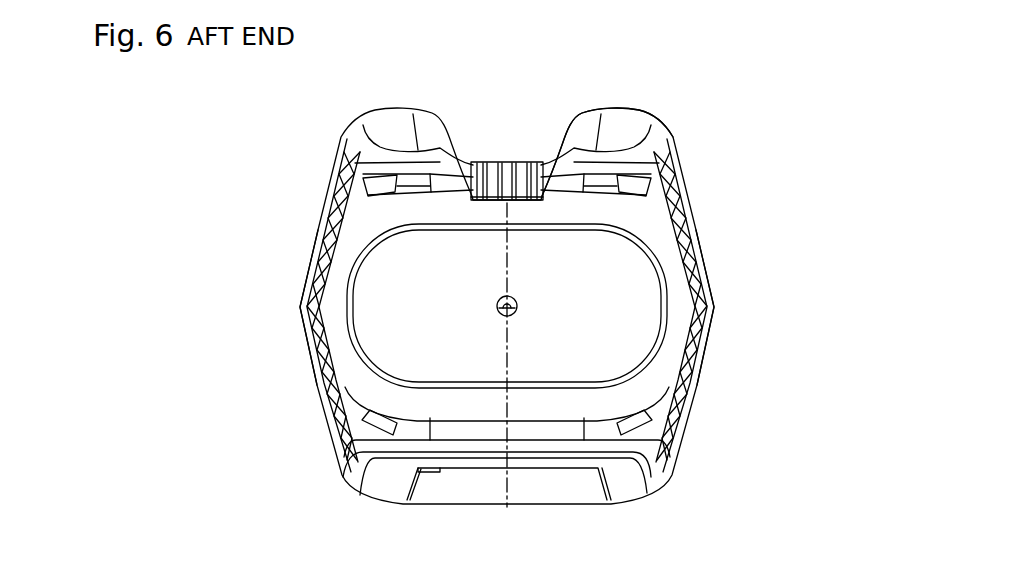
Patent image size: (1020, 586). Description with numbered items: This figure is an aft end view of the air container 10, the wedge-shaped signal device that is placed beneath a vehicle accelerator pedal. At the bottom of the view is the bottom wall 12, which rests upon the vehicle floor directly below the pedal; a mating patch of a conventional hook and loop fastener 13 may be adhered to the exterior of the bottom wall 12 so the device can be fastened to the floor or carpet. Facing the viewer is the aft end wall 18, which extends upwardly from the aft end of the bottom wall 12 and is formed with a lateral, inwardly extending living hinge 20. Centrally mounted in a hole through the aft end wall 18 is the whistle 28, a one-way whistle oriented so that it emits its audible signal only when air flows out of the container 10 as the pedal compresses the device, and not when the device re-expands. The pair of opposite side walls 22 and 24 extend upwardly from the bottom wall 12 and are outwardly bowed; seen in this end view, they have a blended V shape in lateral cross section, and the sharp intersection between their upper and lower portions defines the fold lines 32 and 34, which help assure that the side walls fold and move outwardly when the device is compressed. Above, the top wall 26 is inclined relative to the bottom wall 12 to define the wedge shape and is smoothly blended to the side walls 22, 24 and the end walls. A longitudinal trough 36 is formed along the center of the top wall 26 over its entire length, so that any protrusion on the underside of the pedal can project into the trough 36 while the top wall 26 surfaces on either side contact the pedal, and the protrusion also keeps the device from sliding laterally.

The air container 10 is at (262, 255).
The bottom wall 12 is at (630, 483).
The hook and loop fastener 13 is at (537, 483).
The aft end wall 18 is at (377, 310).
The living hinge 20 is at (630, 308).
The side wall 22 is at (707, 350).
The side wall 24 is at (322, 205).
The top wall 26 is at (594, 125).
The whistle 28 is at (517, 302).
The fold line 32 is at (710, 303).
The fold line 34 is at (300, 307).
The longitudinal trough 36 is at (493, 167).